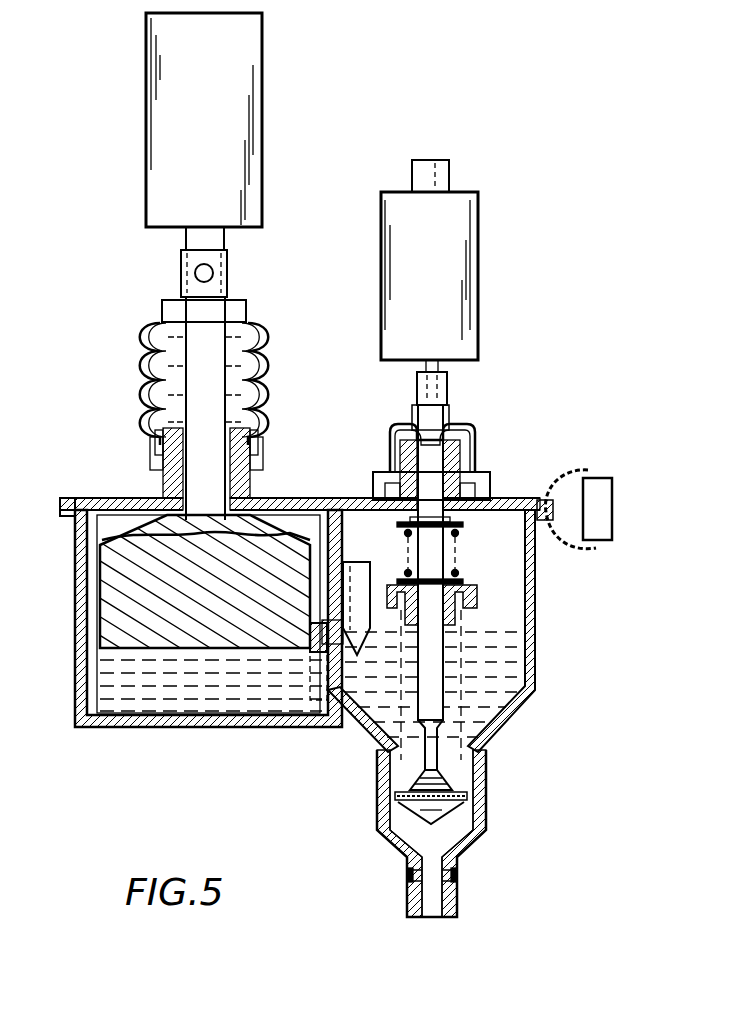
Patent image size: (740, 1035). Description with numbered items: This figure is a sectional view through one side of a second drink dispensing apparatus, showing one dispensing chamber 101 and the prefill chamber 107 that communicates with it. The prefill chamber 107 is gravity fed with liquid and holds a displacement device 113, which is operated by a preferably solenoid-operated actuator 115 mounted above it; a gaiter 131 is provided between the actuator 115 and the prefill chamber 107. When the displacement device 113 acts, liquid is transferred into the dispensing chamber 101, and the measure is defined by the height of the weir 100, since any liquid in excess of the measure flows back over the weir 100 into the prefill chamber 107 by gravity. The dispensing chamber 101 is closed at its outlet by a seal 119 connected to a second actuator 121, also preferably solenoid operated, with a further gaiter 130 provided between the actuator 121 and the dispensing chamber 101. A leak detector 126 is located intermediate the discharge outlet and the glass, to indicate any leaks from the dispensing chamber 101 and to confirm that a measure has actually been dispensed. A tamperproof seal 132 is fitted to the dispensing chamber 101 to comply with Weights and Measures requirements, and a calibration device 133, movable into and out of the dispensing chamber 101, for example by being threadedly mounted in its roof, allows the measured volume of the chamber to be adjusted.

The weir 100 is at (333, 605).
The dispensing chamber 101 is at (497, 700).
The prefill chamber 107 is at (205, 700).
The displacement device 113 is at (130, 612).
The actuator 115 is at (232, 112).
The seal 119 is at (398, 805).
The actuator 121 is at (448, 272).
The leak detector 126 is at (446, 876).
The gaiter 130 is at (470, 440).
The gaiter 131 is at (266, 392).
The tamperproof seal 132 is at (594, 510).
The calibration device 133 is at (345, 640).